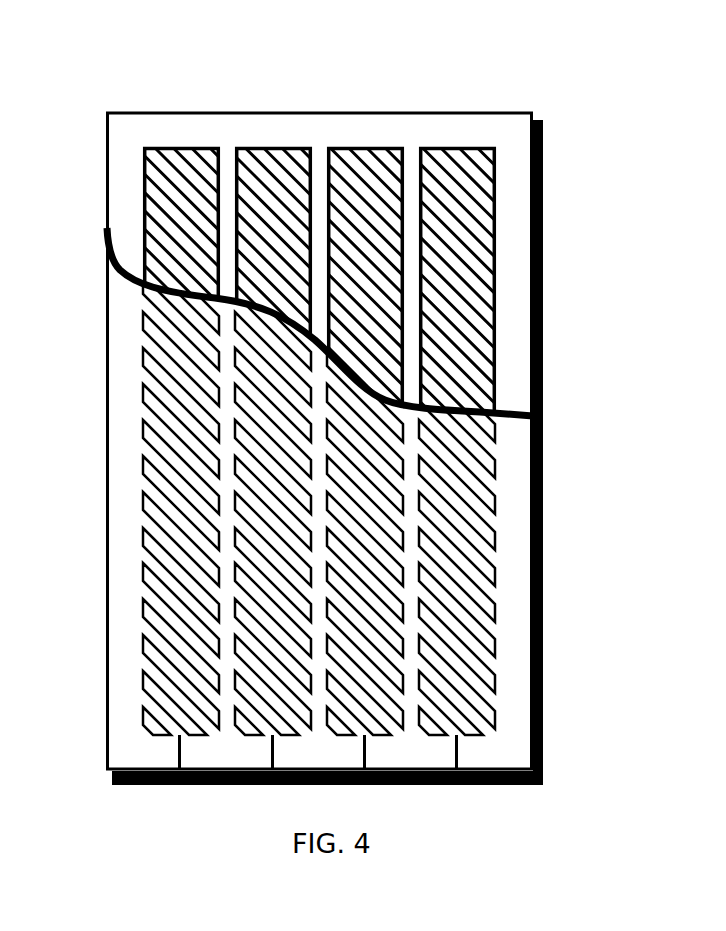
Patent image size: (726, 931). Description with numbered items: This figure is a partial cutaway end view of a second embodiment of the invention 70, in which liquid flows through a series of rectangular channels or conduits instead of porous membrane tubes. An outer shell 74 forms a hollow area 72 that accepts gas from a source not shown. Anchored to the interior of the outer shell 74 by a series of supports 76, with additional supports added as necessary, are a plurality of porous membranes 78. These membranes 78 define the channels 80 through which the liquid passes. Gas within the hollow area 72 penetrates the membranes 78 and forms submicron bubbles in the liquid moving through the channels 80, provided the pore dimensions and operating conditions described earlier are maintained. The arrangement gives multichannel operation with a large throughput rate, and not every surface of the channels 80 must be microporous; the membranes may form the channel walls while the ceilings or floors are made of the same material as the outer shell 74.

The second embodiment of the invention 70 is at (612, 119).
The hollow area 72 is at (120, 443).
The outer shell 74 is at (107, 568).
The supports 76 is at (178, 758).
The porous membranes 78 is at (495, 533).
The channels 80 is at (475, 643).